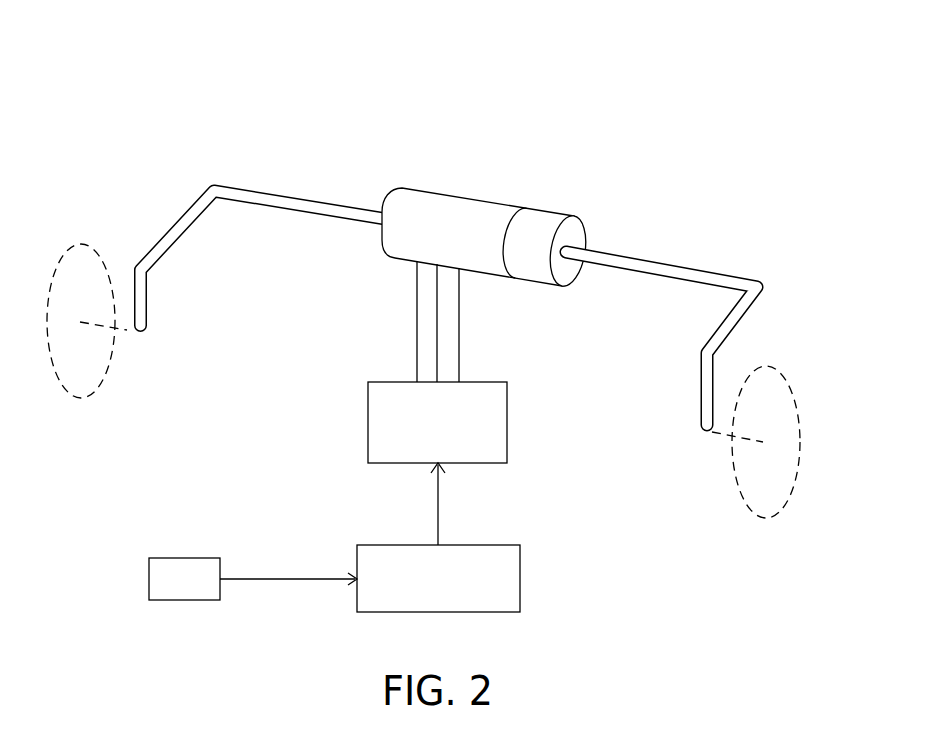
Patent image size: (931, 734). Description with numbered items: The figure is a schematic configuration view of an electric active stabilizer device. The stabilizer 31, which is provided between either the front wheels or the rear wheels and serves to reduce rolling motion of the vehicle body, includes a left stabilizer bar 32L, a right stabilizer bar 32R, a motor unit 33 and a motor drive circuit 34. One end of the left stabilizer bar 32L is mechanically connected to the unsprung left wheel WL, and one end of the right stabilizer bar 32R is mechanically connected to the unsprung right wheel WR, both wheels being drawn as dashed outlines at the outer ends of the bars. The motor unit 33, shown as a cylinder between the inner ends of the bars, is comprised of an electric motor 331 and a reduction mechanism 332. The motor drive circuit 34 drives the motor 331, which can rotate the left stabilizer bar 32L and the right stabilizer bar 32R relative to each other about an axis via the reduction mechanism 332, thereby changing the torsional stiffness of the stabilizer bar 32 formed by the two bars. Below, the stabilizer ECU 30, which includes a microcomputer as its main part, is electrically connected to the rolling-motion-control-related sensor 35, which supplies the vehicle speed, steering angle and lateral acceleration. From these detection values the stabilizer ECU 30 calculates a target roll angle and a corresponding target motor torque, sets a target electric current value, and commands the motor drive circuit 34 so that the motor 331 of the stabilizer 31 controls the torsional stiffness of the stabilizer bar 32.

The stabilizer ECU 30 is at (463, 545).
The stabilizer 31 is at (273, 430).
The stabilizer bar 32 is at (449, 243).
The right stabilizer bar 32R is at (292, 192).
The left stabilizer bar 32L is at (707, 268).
The motor unit 33 is at (528, 268).
The electric motor 331 is at (482, 203).
The reduction mechanism 332 is at (542, 212).
The motor drive circuit 34 is at (507, 413).
The rolling-motion-control-related sensor 35 is at (184, 558).
The left wheel WL is at (85, 245).
The right wheel WR is at (793, 397).